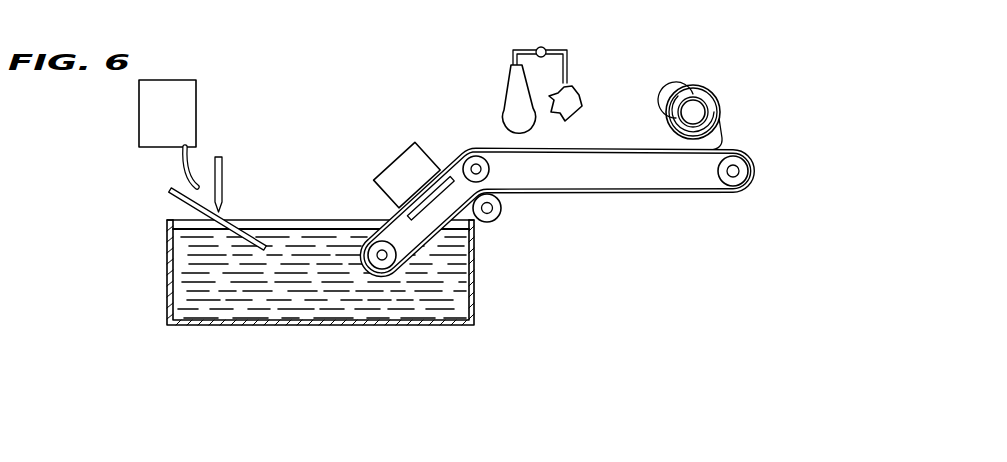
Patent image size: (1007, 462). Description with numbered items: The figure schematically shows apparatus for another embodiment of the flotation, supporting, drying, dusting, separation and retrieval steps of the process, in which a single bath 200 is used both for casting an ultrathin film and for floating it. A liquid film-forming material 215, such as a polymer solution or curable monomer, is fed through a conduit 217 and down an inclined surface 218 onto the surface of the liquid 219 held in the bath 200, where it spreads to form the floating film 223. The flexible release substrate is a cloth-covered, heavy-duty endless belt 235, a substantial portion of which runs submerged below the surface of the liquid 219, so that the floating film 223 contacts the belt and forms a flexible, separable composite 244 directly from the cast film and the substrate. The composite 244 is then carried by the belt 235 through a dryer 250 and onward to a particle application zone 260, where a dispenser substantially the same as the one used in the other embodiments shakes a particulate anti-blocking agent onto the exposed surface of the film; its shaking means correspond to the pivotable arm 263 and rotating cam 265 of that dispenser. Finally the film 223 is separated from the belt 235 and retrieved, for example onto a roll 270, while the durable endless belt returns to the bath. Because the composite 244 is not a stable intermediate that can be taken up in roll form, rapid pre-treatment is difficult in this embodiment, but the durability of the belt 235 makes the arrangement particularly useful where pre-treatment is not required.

The bath 200 is at (325, 172).
The film-forming material 215 is at (180, 107).
The conduit 217 is at (198, 162).
The inclined surface 218 is at (171, 192).
The liquid 219 is at (331, 308).
The floating film 223 is at (283, 228).
The endless belt 235 is at (535, 193).
The separable composite 244 is at (397, 208).
The dryer 250 is at (418, 162).
The particle application zone 260 is at (572, 41).
The pivot arm 263 is at (541, 47).
The cut piece 265 is at (572, 97).
The supply roll 270 is at (701, 92).